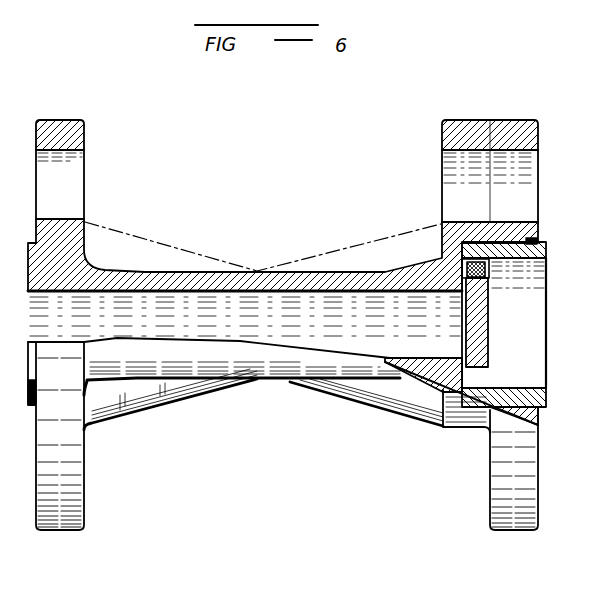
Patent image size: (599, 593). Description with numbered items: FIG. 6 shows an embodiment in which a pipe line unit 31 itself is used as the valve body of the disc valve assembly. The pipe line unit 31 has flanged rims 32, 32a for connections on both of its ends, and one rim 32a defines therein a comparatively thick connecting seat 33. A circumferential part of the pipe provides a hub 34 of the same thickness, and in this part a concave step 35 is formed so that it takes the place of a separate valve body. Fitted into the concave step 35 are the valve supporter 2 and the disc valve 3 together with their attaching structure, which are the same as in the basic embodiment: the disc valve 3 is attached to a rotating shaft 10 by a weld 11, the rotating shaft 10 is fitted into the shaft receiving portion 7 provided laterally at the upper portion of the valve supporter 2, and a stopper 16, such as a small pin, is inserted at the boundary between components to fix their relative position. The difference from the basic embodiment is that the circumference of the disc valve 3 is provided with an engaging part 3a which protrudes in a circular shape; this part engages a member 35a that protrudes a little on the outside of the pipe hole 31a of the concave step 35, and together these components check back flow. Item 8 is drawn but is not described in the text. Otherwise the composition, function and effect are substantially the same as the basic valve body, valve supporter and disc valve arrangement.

The valve supporter 2 is at (527, 262).
The disc valve 3 is at (473, 322).
The engaging part 3a is at (487, 373).
The shaft receiving portion 7 is at (486, 250).
The ring inner surface 8 is at (530, 387).
The rotating shaft 10 is at (458, 266).
The weld 11 is at (487, 277).
The stopper 16 is at (536, 241).
The pipe line unit 31 is at (335, 376).
The pipe hole 31a is at (252, 292).
The flanged rim 32 is at (72, 470).
The flanged rim 32a is at (502, 492).
The connecting seat 33 is at (445, 131).
The hub 34 is at (453, 418).
The concave step 35 is at (462, 250).
The protruding member 35a is at (460, 364).